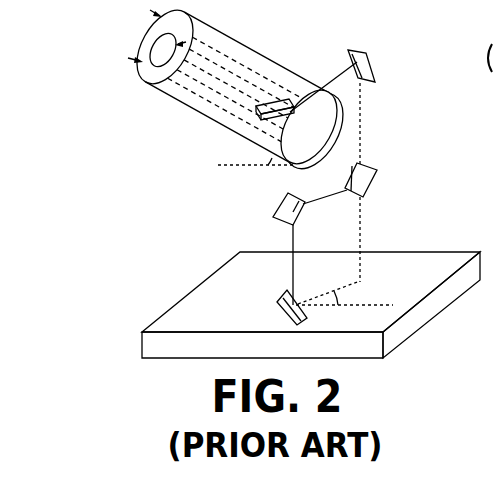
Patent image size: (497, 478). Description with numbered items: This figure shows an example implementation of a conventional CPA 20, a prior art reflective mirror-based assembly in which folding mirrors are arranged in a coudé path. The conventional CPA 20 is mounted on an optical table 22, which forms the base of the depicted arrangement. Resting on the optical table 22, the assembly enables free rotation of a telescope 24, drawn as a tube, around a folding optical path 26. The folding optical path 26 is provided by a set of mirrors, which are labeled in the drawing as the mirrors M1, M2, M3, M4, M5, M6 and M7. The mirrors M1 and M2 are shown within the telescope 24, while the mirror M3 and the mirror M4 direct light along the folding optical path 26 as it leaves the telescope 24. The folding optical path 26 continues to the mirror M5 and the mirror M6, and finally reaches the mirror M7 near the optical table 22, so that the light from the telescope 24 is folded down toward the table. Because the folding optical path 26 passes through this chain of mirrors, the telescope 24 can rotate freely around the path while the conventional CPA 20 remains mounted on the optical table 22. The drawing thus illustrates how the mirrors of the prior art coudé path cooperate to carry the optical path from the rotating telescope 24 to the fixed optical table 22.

The conventional CPA 20 is at (112, 156).
The optical table 22 is at (447, 290).
The telescope 24 is at (283, 66).
The folding optical path 26 is at (362, 138).
The primary mirror M1 is at (312, 130).
The secondary mirror M2 is at (149, 36).
The tertiary fold mirror M3 is at (275, 102).
The fold mirror M4 is at (343, 78).
The fold mirror M5 is at (350, 183).
The fold mirror M6 is at (272, 249).
The fold mirror M7 is at (274, 307).